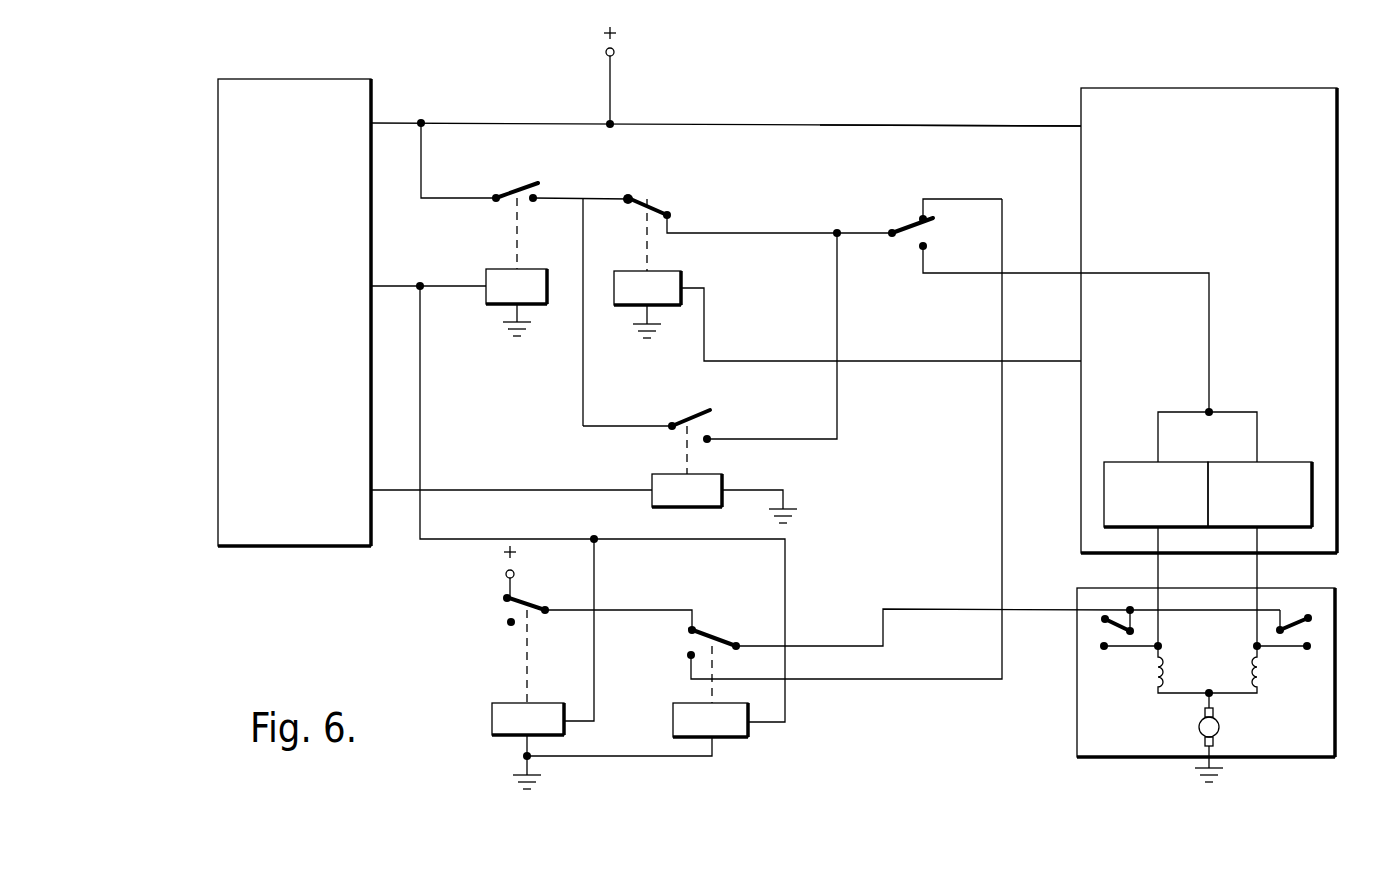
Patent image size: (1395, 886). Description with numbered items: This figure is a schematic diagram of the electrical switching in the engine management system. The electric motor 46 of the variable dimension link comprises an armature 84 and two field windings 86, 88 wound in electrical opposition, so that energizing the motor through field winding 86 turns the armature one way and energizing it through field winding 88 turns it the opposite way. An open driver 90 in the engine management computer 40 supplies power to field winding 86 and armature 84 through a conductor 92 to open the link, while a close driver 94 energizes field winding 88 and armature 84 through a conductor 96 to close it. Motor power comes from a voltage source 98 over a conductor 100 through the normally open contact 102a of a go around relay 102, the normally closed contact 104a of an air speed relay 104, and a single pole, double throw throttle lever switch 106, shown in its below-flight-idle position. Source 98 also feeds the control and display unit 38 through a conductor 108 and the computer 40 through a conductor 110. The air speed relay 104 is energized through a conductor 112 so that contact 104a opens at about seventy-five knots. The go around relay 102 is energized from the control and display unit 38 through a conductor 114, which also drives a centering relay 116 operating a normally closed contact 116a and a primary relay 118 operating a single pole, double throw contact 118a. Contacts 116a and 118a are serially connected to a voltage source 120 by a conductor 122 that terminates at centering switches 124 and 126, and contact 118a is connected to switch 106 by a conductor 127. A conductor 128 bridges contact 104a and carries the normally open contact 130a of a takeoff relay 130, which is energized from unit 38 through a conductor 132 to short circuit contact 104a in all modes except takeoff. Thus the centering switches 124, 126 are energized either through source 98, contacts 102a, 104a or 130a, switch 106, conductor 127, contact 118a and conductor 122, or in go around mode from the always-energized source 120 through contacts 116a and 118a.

The control and display unit 38 is at (332, 146).
The engine management computer 40 is at (1277, 151).
The electric motor 46 is at (1135, 758).
The armature 84 is at (1221, 727).
The field winding 86 is at (1154, 683).
The field winding 88 is at (1262, 677).
The open driver 90 is at (1121, 471).
The conductor 92 is at (1159, 575).
The close driver 94 is at (1303, 470).
The conductor 96 is at (1259, 578).
The voltage source 98 is at (614, 50).
The conductor 100 is at (497, 121).
The go around relay 102 is at (486, 303).
The normally open contact 102a is at (500, 194).
The air speed relay 104 is at (683, 273).
The normally closed contact 104a is at (650, 207).
The throttle lever switch 106 is at (905, 224).
The conductor 108 is at (404, 121).
The conductor 110 is at (958, 124).
The conductor 112 is at (903, 360).
The conductor 114 is at (388, 283).
The centering relay 116 is at (561, 706).
The normally closed contact 116a is at (530, 601).
The primary relay 118 is at (750, 703).
The single pole, double throw contact 118a is at (706, 634).
The voltage source 120 is at (506, 577).
The conductor 122 is at (831, 645).
The centering switch 124 is at (1105, 628).
The centering switch 126 is at (1293, 620).
The conductor 127 is at (1003, 527).
The conductor 128 is at (838, 407).
The takeoff relay 130 is at (723, 474).
The normally open contact 130a is at (680, 420).
The conductor 132 is at (512, 488).